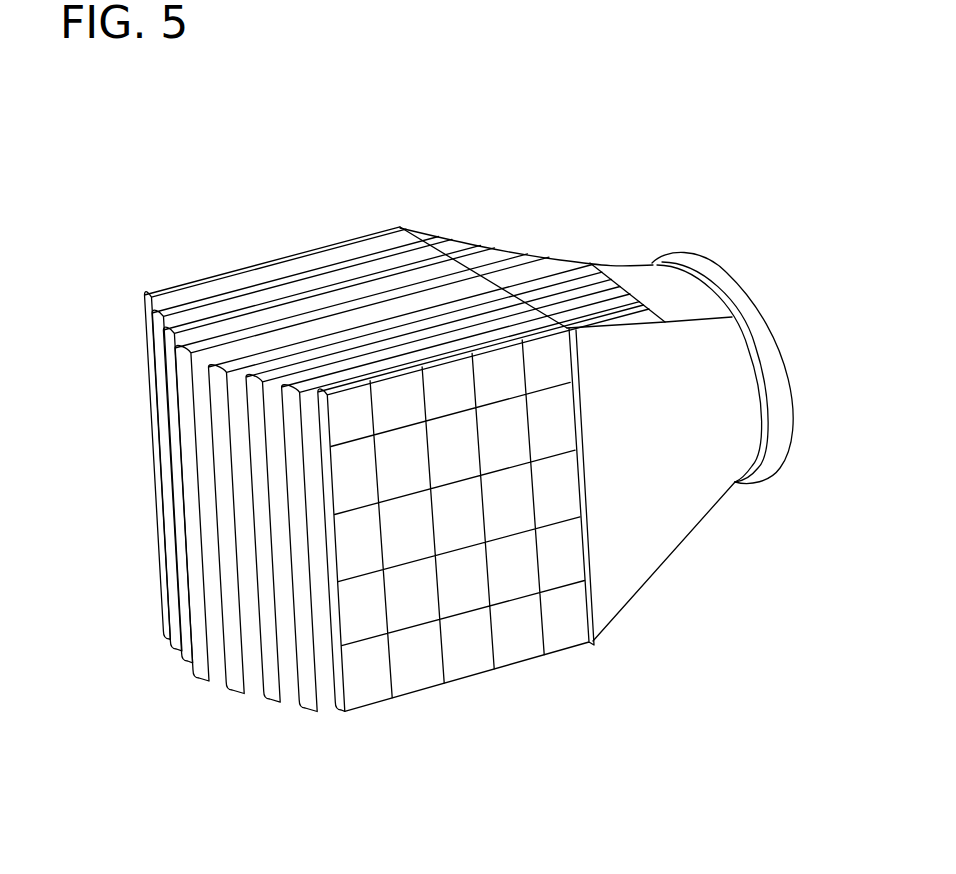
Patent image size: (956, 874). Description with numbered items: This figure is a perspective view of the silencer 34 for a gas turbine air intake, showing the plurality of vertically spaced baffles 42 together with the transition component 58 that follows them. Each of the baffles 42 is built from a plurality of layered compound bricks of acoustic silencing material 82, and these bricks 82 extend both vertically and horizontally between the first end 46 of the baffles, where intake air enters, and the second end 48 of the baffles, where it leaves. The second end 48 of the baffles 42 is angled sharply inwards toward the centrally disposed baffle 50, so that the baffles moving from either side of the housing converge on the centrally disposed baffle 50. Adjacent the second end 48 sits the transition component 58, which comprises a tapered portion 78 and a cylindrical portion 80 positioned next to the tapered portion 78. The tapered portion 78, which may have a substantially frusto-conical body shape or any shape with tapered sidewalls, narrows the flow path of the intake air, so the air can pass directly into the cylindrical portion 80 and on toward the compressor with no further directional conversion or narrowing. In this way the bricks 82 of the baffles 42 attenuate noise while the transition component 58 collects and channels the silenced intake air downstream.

The silencer 34 is at (108, 307).
The vertically spaced baffles 42 is at (280, 243).
The first end of the baffles 46 is at (183, 710).
The second end of the baffles 48 is at (618, 230).
The centrally disposed baffle 50 is at (180, 389).
The transition component 58 is at (697, 272).
The tapered portion 78 is at (697, 302).
The cylindrical portion 80 is at (777, 407).
The layered compound bricks of acoustic silencing material 82 is at (560, 633).